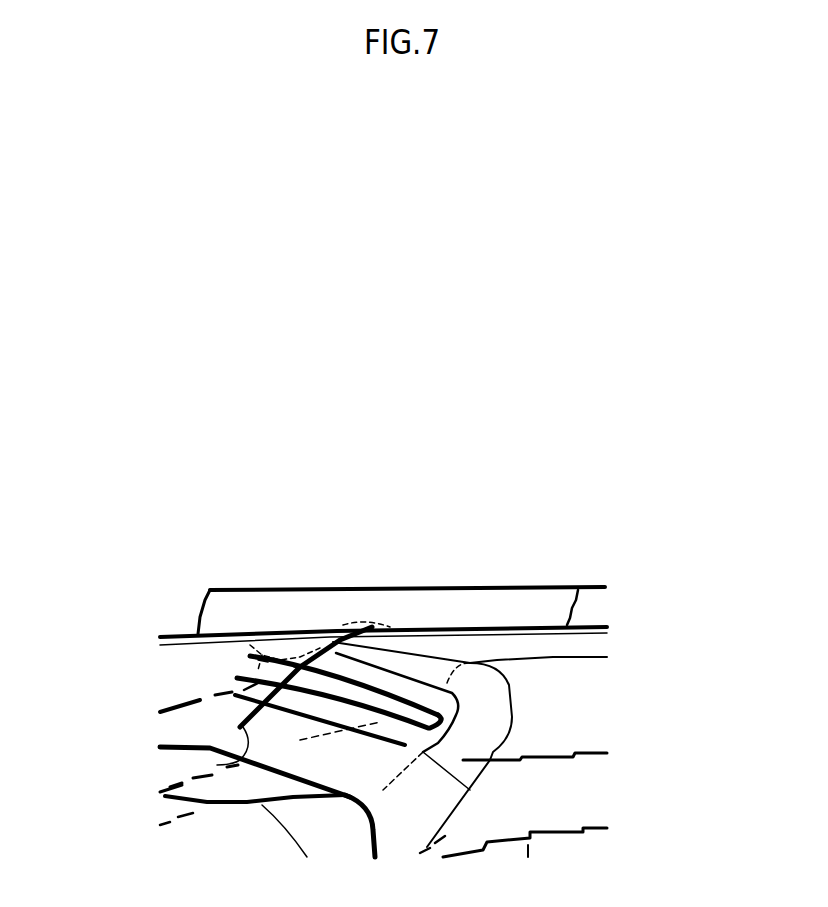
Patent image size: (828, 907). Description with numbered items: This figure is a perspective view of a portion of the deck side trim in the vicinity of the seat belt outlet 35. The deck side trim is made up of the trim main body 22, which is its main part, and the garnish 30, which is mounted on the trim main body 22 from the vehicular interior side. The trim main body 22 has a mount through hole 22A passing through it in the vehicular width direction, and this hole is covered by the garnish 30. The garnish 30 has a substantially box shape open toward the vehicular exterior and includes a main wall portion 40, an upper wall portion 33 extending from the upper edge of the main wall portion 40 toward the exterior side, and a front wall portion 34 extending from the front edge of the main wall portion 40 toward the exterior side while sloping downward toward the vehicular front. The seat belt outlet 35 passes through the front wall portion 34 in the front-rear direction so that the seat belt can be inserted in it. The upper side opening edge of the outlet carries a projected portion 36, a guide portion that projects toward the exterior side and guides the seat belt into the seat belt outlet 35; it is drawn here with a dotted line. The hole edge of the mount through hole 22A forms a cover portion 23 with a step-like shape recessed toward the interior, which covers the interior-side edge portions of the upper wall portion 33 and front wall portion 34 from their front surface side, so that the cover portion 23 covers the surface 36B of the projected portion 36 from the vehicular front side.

The trim main body 22 is at (200, 715).
The mount through hole 22A is at (225, 763).
The cover portion 23 is at (248, 690).
The garnish 30 is at (573, 724).
The upper wall portion 33 is at (480, 648).
The front wall portion 34 is at (337, 715).
The seat belt outlet 35 is at (371, 714).
The projected portion 36 is at (265, 656).
The surface of the projected portion 36B is at (263, 653).
The main wall portion 40 is at (545, 810).